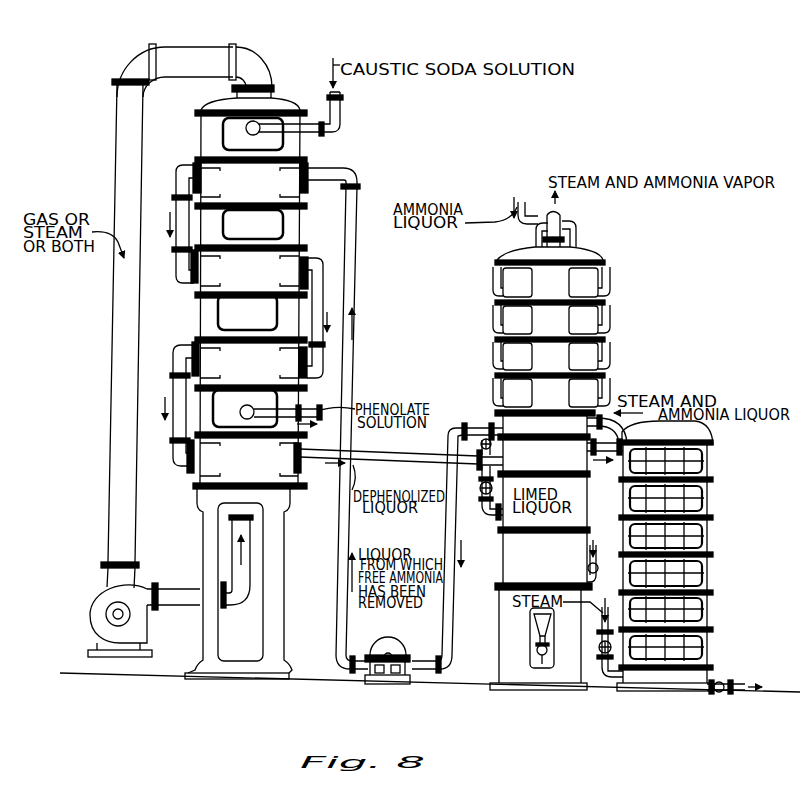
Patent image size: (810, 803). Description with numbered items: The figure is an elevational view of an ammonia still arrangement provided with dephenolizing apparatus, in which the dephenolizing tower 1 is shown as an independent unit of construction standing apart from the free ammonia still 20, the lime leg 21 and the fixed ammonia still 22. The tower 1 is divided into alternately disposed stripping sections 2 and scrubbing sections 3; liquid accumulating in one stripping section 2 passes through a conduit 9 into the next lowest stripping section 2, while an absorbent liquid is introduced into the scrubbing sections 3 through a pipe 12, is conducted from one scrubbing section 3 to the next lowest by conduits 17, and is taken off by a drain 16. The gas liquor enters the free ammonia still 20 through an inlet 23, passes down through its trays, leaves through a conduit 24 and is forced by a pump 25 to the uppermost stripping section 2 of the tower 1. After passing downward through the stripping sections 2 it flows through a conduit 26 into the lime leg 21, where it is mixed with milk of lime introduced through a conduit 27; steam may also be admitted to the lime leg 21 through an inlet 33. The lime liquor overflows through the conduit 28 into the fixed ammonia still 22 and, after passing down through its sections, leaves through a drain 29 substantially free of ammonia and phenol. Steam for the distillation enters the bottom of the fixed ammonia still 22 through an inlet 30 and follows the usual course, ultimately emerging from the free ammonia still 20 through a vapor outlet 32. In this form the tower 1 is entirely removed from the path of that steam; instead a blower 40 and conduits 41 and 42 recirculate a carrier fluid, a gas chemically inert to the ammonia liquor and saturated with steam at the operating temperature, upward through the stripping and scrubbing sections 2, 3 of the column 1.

The tower 1 is at (175, 326).
The stripping section 2 is at (287, 179).
The scrubbing section 3 is at (293, 146).
The conduit 9 is at (176, 210).
The pipe 12 is at (341, 97).
The drain 16 is at (284, 424).
The conduit 17 is at (238, 270).
The free ammonia still 20 is at (577, 320).
The lime leg 21 is at (517, 564).
The fixed ammonia still 22 is at (705, 534).
The inlet 23 is at (530, 203).
The conduit 24 is at (358, 241).
The pump 25 is at (400, 640).
The conduit 26 is at (433, 457).
The conduit 27 is at (486, 503).
The conduit 28 is at (613, 463).
The drain 29 is at (736, 692).
The inlet 30 is at (608, 670).
The vapor outlet 32 is at (561, 221).
The inlet 33 is at (587, 573).
The blower 40 is at (143, 610).
The conduit 41 is at (178, 592).
The conduit 42 is at (262, 72).